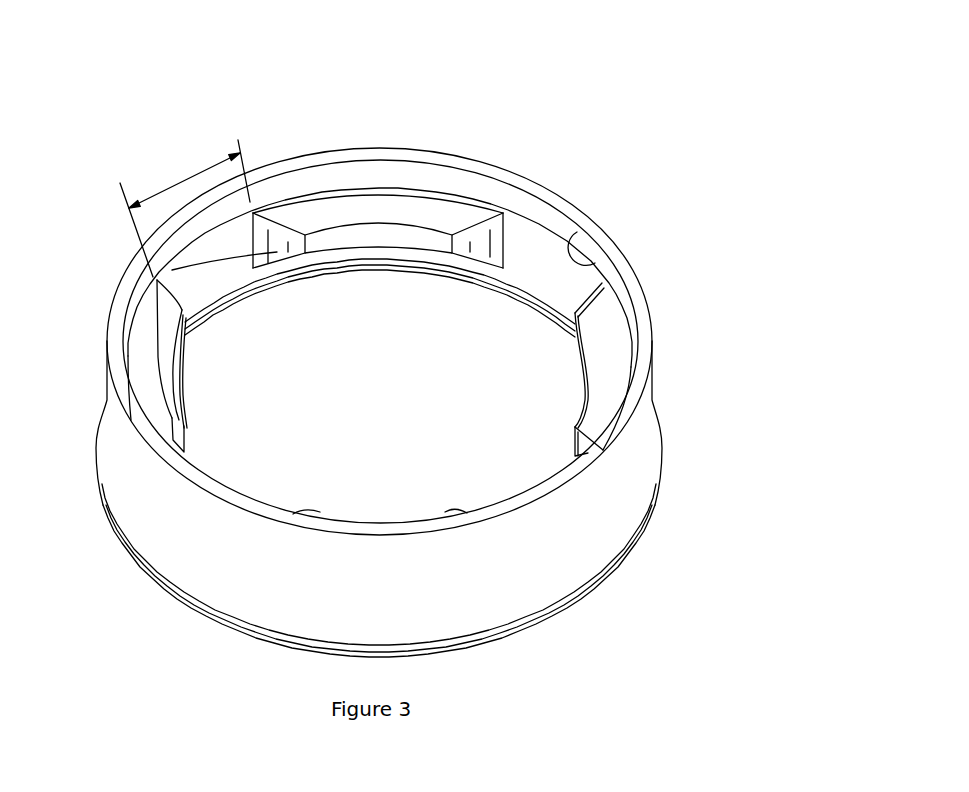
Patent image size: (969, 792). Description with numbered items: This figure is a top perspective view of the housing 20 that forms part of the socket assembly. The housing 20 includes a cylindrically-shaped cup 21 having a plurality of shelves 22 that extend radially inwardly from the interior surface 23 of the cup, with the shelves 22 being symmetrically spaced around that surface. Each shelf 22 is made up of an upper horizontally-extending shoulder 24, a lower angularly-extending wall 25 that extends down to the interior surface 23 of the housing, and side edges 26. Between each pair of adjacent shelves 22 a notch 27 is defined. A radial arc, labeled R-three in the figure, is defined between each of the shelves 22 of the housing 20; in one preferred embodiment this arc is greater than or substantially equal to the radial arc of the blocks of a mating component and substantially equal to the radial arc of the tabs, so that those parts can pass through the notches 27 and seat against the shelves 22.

The housing 20 is at (497, 148).
The cylindrically-shaped cup 21 is at (653, 392).
The shelves 22 is at (377, 518).
The interior surface 23 is at (560, 274).
The upper horizontally-extending shoulder 24 is at (393, 212).
The lower angularly-extending wall 25 is at (485, 268).
The side edges 26 is at (124, 212).
The notch 27 is at (217, 237).